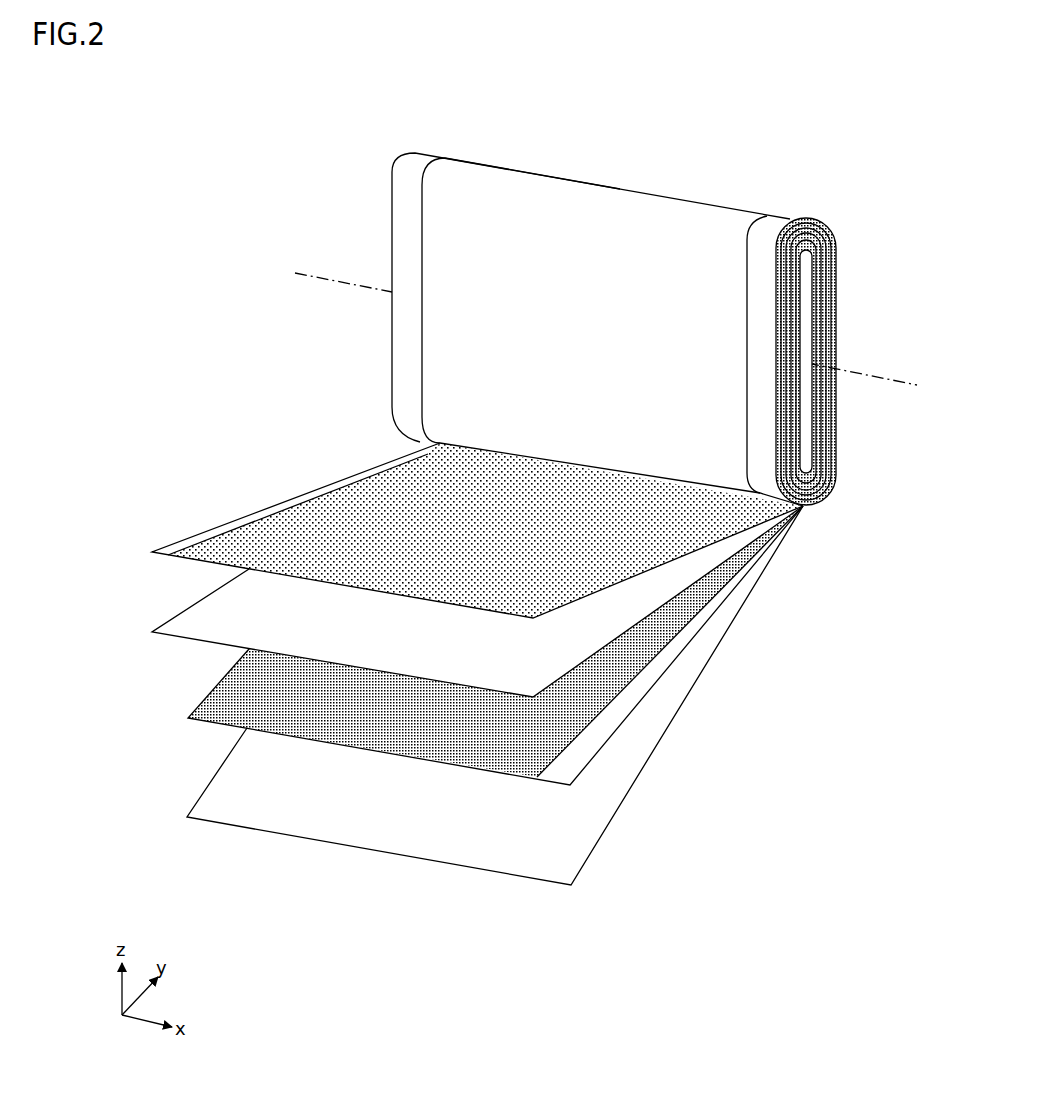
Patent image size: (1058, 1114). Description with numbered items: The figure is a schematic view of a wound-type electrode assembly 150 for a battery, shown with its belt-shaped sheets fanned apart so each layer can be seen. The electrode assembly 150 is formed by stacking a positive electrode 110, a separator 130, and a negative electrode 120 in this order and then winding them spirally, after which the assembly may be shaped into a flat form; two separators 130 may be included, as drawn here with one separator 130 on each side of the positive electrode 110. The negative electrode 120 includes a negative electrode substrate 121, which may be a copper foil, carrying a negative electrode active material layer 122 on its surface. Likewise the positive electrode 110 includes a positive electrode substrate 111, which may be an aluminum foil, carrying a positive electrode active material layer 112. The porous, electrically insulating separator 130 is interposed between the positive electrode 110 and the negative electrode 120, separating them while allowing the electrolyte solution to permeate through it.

The electrode assembly 150 is at (283, 130).
The negative electrode 120 is at (455, 530).
The negative electrode substrate 121 is at (268, 510).
The negative electrode active material layer 122 is at (330, 518).
The separator 130 is at (222, 642).
The positive electrode 110 is at (518, 645).
The positive electrode substrate 111 is at (565, 764).
The positive electrode active material layer 112 is at (548, 734).